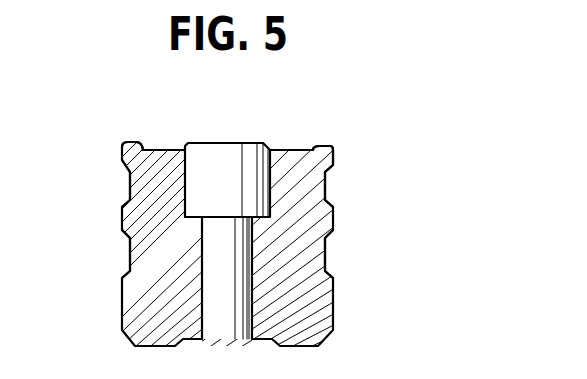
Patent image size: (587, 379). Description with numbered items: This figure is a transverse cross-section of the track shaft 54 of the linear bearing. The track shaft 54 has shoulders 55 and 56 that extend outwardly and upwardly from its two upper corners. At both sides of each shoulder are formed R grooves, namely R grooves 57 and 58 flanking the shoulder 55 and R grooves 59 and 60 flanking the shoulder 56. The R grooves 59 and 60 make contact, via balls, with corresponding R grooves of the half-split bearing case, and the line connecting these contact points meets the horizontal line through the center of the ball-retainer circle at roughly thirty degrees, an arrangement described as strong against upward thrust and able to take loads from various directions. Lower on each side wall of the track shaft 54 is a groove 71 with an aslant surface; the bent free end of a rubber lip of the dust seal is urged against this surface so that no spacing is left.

The track shaft 54 is at (327, 298).
The shoulder 55 is at (131, 142).
The R groove 58 is at (146, 148).
The R groove 57 is at (124, 166).
The R groove 59 is at (314, 148).
The shoulder 56 is at (332, 149).
The R groove 60 is at (333, 168).
The groove 71 is at (130, 253).